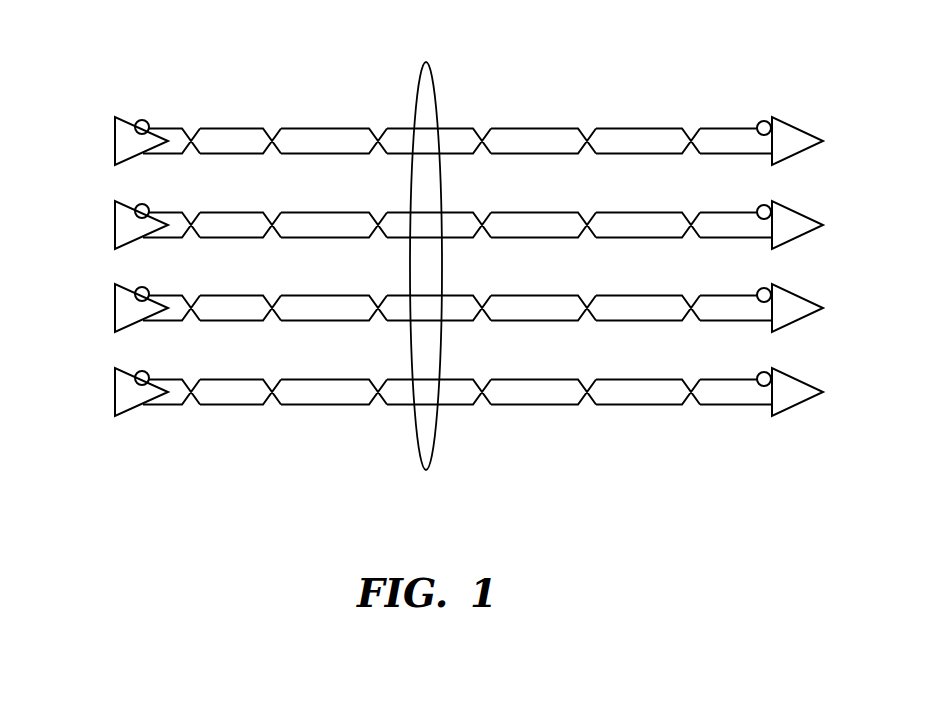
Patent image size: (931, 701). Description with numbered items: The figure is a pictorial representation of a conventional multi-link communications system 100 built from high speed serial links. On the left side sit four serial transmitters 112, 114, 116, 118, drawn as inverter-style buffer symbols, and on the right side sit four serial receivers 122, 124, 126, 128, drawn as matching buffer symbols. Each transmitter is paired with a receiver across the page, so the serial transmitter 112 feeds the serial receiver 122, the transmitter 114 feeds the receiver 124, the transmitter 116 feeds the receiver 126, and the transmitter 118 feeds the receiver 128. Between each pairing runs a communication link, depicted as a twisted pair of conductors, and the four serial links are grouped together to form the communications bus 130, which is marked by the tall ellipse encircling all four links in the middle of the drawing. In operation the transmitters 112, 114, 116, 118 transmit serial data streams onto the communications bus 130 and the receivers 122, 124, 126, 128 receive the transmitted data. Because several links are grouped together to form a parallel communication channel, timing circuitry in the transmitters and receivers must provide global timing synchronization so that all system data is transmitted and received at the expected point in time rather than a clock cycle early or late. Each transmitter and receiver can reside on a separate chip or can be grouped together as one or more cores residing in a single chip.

The multi-link communications system 100 is at (100, 38).
The serial transmitter 112 is at (120, 134).
The serial transmitter 114 is at (120, 218).
The serial transmitter 116 is at (120, 301).
The serial transmitter 118 is at (120, 385).
The serial receiver 122 is at (797, 133).
The serial receiver 124 is at (797, 217).
The serial receiver 126 is at (797, 300).
The serial receiver 128 is at (797, 384).
The communications bus 130 is at (430, 73).